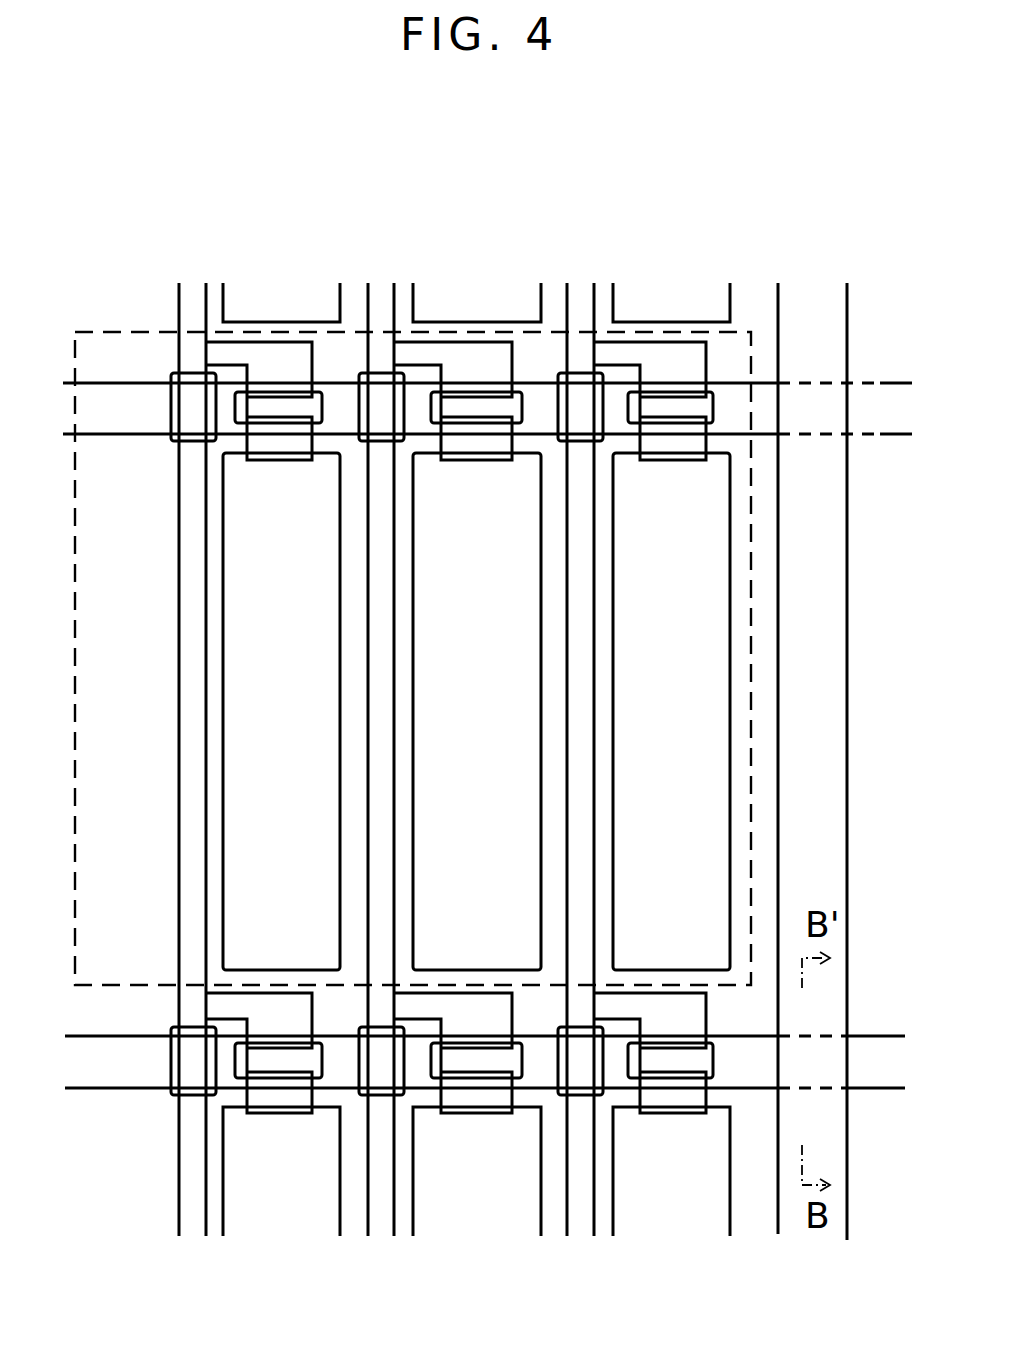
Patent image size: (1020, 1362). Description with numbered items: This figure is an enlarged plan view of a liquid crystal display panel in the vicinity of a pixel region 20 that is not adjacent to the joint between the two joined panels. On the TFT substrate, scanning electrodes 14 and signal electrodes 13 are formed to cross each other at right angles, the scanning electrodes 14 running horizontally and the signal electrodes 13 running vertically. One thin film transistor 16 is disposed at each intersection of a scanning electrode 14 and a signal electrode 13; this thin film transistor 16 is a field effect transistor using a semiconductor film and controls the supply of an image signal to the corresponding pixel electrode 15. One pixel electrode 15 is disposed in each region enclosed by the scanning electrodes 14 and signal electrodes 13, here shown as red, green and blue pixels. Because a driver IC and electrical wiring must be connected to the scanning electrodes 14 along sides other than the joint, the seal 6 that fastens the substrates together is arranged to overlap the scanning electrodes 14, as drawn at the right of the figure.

The pixel region 20 is at (108, 330).
The signal electrode 13 is at (194, 298).
The scanning electrode 14 is at (142, 415).
The pixel electrode 15 is at (247, 532).
The thin film transistor 16 is at (288, 407).
The seal 6 is at (850, 628).